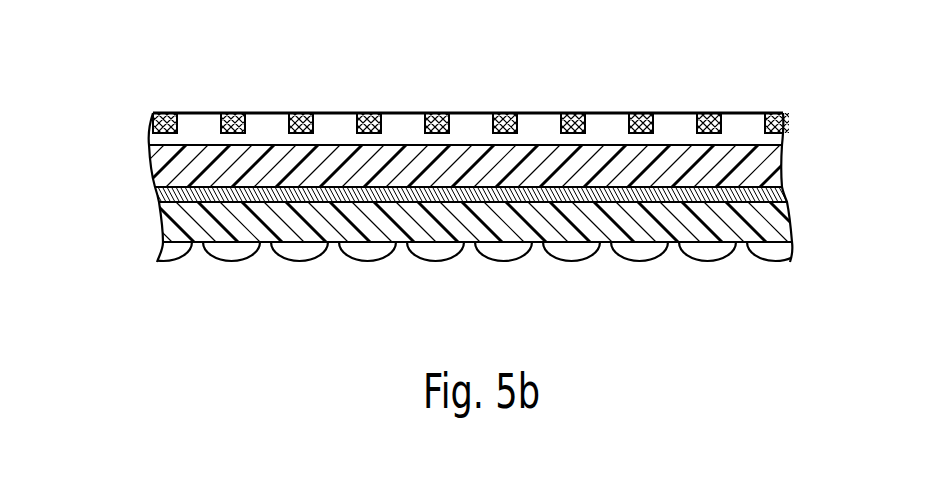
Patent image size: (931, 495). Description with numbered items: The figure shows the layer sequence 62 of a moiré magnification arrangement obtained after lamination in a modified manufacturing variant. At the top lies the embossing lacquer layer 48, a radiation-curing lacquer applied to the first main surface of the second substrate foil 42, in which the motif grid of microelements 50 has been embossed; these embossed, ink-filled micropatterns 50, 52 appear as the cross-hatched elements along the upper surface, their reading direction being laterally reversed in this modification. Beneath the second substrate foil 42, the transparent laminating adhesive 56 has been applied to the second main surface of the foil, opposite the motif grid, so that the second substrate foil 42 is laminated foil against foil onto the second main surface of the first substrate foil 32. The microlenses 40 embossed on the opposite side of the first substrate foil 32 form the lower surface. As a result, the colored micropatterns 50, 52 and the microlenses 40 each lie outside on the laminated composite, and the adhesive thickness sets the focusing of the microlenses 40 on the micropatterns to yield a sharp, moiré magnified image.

The modification 62 is at (118, 87).
The embossing lacquer layer 48 is at (770, 138).
The microelements 50 is at (503, 112).
The micropatterns 52 is at (503, 112).
The second substrate foil 42 is at (767, 168).
The transparent laminating adhesive 56 is at (773, 197).
The first substrate foil 32 is at (775, 225).
The microlenses 40 is at (505, 250).